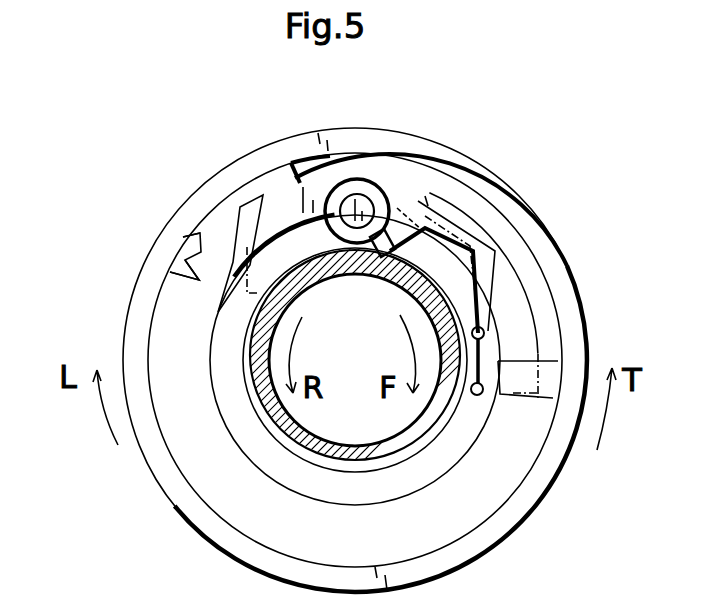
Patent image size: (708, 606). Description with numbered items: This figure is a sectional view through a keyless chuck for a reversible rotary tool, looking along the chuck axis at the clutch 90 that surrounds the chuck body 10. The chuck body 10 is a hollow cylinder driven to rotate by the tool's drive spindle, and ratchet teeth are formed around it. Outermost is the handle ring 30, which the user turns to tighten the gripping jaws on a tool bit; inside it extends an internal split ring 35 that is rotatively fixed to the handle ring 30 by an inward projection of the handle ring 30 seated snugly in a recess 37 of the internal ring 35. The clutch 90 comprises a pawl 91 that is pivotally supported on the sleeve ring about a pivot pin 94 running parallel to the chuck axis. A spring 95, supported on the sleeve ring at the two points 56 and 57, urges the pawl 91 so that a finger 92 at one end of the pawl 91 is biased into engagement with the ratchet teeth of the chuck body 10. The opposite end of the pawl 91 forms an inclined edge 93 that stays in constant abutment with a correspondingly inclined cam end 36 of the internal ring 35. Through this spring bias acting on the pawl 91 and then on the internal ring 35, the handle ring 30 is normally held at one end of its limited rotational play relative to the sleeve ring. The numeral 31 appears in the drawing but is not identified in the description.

The chuck body 10 is at (437, 443).
The handle ring 30 is at (215, 182).
The stopper 31 is at (182, 262).
The internal split ring 35 is at (205, 447).
The inclined cam end 36 is at (238, 222).
The recess 37 is at (200, 278).
The spring support point 56 is at (484, 331).
The spring support point 57 is at (483, 386).
The clutch 90 is at (408, 178).
The pawl 91 is at (347, 205).
The finger 92 is at (440, 232).
The inclined edge 93 is at (190, 234).
The pivot pin 94 is at (365, 198).
The spring 95 is at (490, 277).